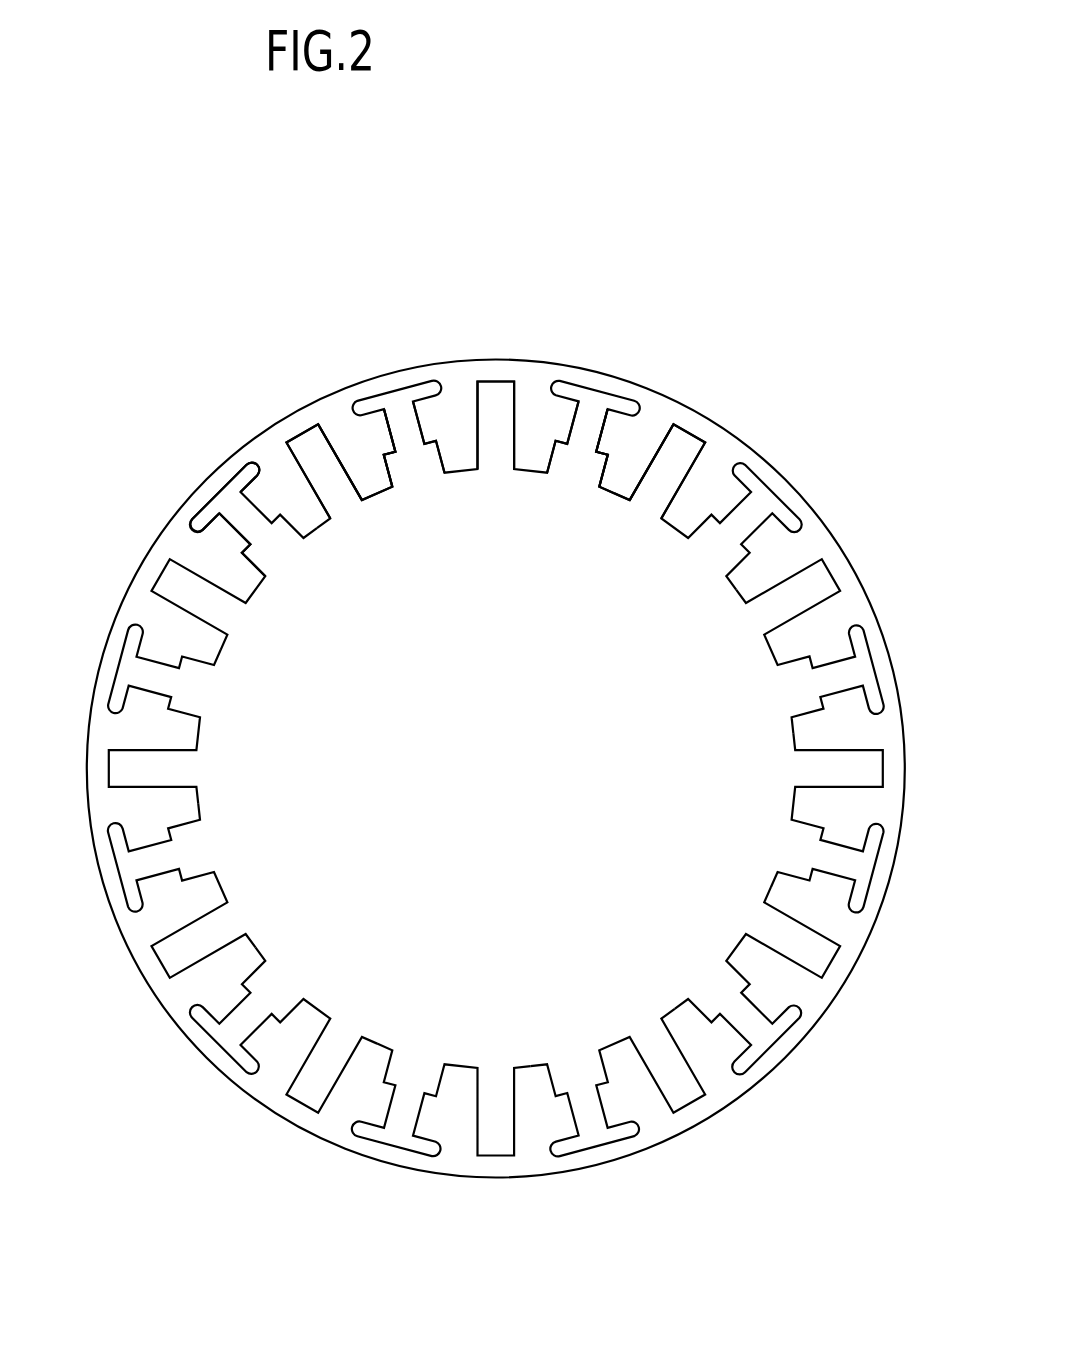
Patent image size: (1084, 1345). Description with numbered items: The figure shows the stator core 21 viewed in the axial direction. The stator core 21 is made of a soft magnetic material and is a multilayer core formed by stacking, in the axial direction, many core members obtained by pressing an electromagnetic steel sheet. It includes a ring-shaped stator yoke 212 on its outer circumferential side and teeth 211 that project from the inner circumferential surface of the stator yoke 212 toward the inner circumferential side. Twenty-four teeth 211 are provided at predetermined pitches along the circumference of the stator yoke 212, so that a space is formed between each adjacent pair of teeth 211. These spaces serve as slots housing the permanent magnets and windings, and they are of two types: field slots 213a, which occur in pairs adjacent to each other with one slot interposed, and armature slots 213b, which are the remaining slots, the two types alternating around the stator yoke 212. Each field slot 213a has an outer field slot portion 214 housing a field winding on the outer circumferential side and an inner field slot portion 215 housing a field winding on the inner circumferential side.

The stator core 21 is at (766, 217).
The teeth 211 is at (375, 494).
The stator yoke 212 is at (459, 380).
The field slots 213a is at (396, 414).
The armature slots 213b is at (301, 445).
The outer field slot portions 214 is at (216, 488).
The inner field slot portions 215 is at (270, 552).